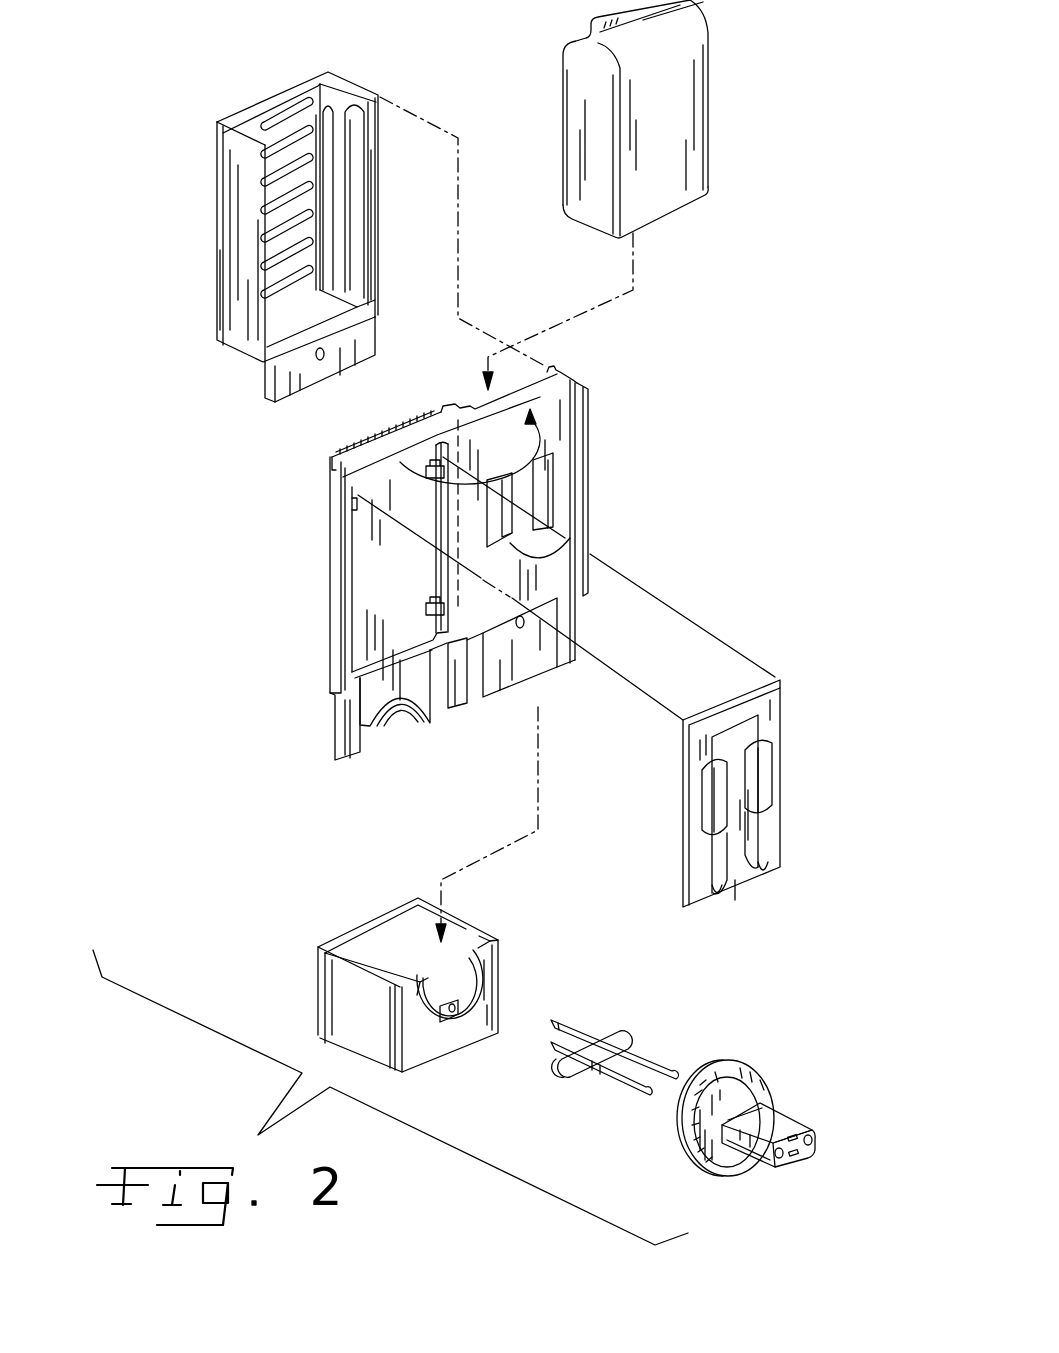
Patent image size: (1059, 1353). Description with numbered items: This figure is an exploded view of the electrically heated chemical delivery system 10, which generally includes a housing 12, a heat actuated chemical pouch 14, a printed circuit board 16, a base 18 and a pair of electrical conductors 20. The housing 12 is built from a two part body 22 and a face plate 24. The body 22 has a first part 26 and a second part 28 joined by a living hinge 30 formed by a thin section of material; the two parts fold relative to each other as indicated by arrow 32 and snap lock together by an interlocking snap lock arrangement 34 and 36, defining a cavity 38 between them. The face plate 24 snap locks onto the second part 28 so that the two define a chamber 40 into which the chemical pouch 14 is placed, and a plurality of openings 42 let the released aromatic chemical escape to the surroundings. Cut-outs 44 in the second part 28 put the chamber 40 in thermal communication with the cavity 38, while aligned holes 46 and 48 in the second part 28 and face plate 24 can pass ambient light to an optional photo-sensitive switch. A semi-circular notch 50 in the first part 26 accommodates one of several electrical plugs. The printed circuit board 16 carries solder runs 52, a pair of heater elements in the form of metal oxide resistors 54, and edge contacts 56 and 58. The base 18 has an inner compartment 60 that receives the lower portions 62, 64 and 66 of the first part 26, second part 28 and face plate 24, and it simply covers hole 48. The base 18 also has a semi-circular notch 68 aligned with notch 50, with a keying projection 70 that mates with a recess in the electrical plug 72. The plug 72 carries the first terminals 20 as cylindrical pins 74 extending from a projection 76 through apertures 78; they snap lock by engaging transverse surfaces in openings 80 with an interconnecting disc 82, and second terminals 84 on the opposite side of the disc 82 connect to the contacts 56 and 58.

The electrically heated chemical delivery system 10 is at (200, 769).
The housing 12 is at (293, 567).
The heat actuated chemical pouch 14 is at (708, 68).
The printed circuit board 16 is at (792, 710).
The base 18 is at (318, 980).
The electrical conductors 20 is at (660, 1027).
The two part body 22 is at (455, 710).
The face plate 24 is at (247, 103).
The first part 26 is at (362, 447).
The second part 28 is at (557, 370).
The living hinge 30 is at (447, 412).
The arrow 32 is at (514, 441).
The interlocking snap lock arrangement 34 is at (588, 435).
The interlocking snap lock arrangement 36 is at (330, 503).
The cavity 38 is at (372, 585).
The chamber 40 is at (284, 100).
The openings 42 is at (284, 232).
The cut-outs 44 is at (540, 552).
The hole 46 is at (522, 627).
The hole 48 is at (323, 359).
The semi-circular notch 50 is at (370, 725).
The solder runs 52 is at (708, 750).
The metal oxide resistors 54 is at (768, 780).
The electrical contact 56 is at (717, 894).
The electrical contact 58 is at (762, 876).
The inner compartment 60 is at (372, 960).
The lower portion 62 is at (351, 766).
The lower portion 64 is at (576, 627).
The lower portion 66 is at (253, 383).
The semi-circular notch 68 is at (431, 1025).
The keying projection 70 is at (473, 1010).
The electrical plug 72 is at (748, 1063).
The cylindrical pins 74 is at (680, 1090).
The projection 76 is at (800, 1124).
The apertures 78 is at (815, 1140).
The openings 80 is at (792, 1136).
The interconnecting disc 82 is at (620, 1030).
The second terminals 84 is at (578, 1030).